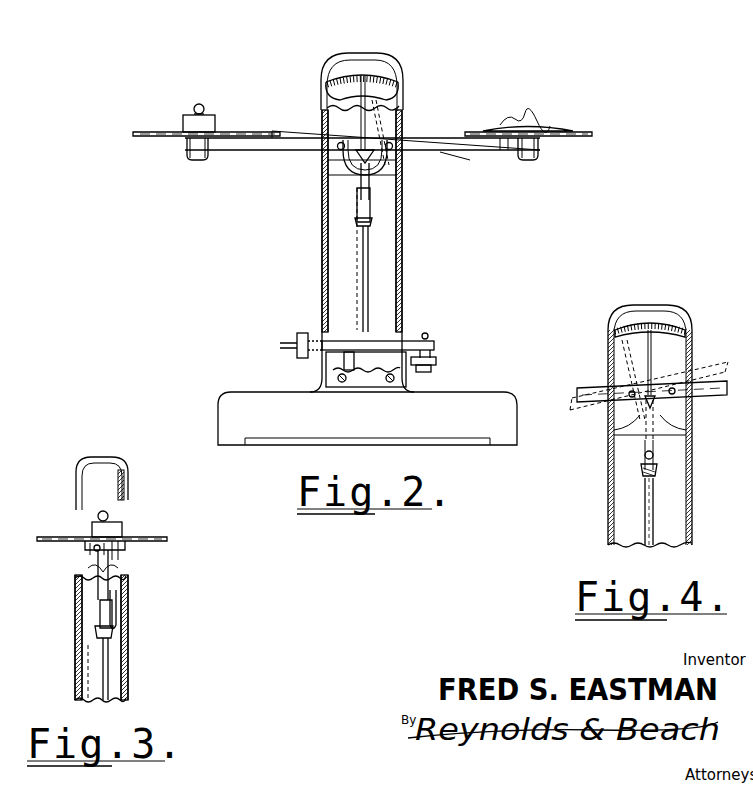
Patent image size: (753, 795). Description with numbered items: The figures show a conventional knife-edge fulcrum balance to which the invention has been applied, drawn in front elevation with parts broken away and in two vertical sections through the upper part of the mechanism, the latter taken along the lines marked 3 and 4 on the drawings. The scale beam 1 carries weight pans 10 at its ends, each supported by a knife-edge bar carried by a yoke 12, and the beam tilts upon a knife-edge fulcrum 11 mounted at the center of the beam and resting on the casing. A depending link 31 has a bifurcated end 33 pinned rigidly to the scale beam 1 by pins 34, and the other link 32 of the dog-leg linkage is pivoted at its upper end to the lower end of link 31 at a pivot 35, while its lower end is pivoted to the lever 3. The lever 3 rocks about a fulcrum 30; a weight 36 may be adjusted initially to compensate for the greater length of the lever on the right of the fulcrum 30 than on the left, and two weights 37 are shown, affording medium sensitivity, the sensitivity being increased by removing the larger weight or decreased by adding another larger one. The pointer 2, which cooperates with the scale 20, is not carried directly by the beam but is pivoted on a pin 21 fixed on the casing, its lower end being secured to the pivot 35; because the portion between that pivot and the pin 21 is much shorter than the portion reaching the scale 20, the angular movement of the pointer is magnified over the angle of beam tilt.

In FIG. 2, the scale beam 1 is at (266, 150).
In FIG. 3, the scale beam 1 is at (128, 547).
In FIG. 4, the scale beam 1 is at (582, 402).
In FIG. 2, the pointer 2 is at (363, 123).
In FIG. 3, the pointer 2 is at (116, 512).
In FIG. 4, the pointer 2 is at (650, 354).
In FIG. 2, the lever 3 is at (393, 6).
In FIG. 3, the section line 4- 4 is at (103, 422).
In FIG. 2, the weight pans 10 is at (147, 137).
In FIG. 3, the weight pans 10 is at (158, 541).
In FIG. 2, the knife-edge fulcrum 11 is at (352, 150).
In FIG. 4, the knife-edge fulcrum 11 is at (655, 402).
In FIG. 2, the yoke 12 is at (207, 152).
In FIG. 3, the yoke 12 is at (122, 544).
In FIG. 2, the scale 20 is at (338, 80).
In FIG. 3, the scale 20 is at (125, 490).
In FIG. 4, the scale 20 is at (668, 330).
In FIG. 3, the pin 21 is at (120, 612).
In FIG. 4, the pin 21 is at (645, 456).
In FIG. 2, the fulcrum 30 is at (345, 356).
In FIG. 2, the depending link 31 is at (365, 195).
In FIG. 3, the depending link 31 is at (100, 603).
In FIG. 2, the link 32 is at (364, 268).
In FIG. 3, the link 32 is at (106, 667).
In FIG. 4, the link 32 is at (647, 498).
In FIG. 2, the bifurcated end 33 is at (388, 160).
In FIG. 3, the bifurcated end 33 is at (95, 563).
In FIG. 2, the pins 34 is at (383, 148).
In FIG. 3, the pins 34 is at (92, 548).
In FIG. 4, the pins 34 is at (628, 396).
In FIG. 2, the pivot 35 is at (360, 224).
In FIG. 3, the pivot 35 is at (97, 632).
In FIG. 4, the pivot 35 is at (656, 470).
In FIG. 2, the weight 36 is at (300, 336).
In FIG. 2, the weights 37 is at (436, 363).